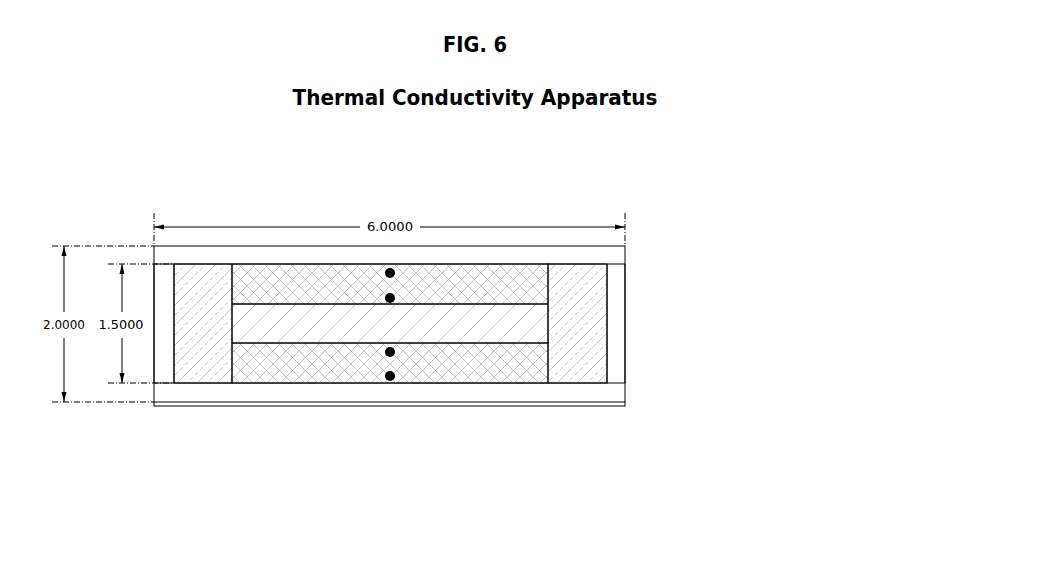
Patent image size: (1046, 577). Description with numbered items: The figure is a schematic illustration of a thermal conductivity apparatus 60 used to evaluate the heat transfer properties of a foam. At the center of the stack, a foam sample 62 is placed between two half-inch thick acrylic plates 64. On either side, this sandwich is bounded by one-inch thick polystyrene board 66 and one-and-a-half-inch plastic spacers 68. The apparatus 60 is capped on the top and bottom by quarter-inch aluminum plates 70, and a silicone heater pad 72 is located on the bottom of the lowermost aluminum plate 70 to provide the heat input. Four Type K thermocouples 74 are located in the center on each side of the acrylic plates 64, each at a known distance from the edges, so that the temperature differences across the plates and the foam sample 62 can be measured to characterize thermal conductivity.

The thermal conductivity apparatus 60 is at (560, 218).
The foam sample 62 is at (482, 325).
The acrylic plates 64 is at (282, 358).
The polystyrene board 66 is at (215, 386).
The plastic spacers 68 is at (98, 220).
The aluminum plates 70 is at (628, 392).
The silicone heater pad 72 is at (628, 403).
The Type K thermocouples 74 is at (392, 383).